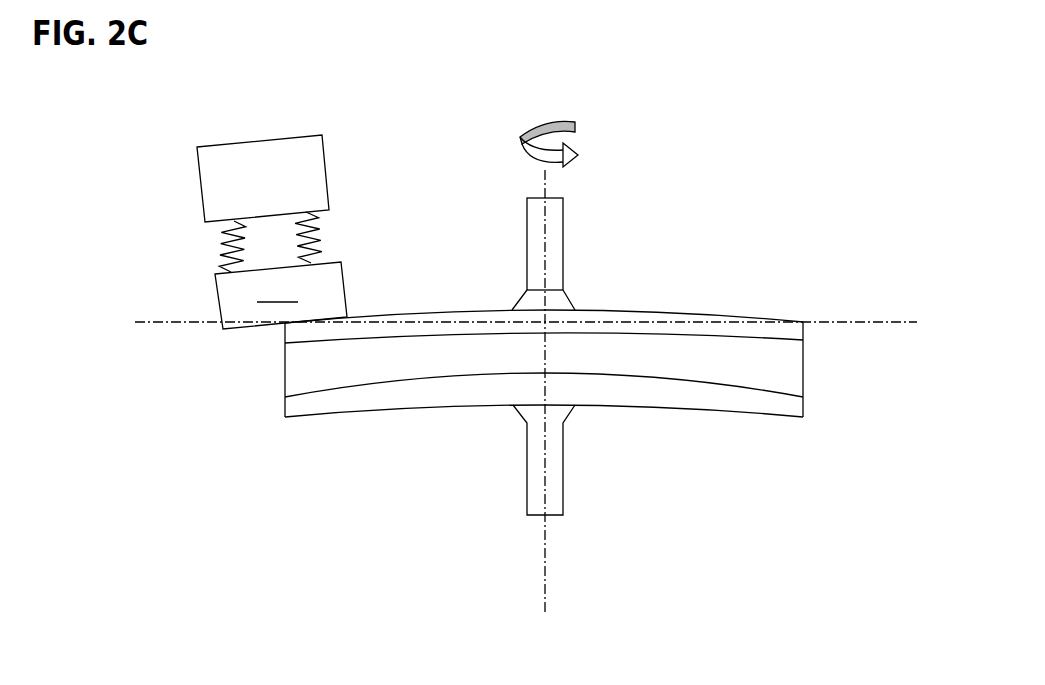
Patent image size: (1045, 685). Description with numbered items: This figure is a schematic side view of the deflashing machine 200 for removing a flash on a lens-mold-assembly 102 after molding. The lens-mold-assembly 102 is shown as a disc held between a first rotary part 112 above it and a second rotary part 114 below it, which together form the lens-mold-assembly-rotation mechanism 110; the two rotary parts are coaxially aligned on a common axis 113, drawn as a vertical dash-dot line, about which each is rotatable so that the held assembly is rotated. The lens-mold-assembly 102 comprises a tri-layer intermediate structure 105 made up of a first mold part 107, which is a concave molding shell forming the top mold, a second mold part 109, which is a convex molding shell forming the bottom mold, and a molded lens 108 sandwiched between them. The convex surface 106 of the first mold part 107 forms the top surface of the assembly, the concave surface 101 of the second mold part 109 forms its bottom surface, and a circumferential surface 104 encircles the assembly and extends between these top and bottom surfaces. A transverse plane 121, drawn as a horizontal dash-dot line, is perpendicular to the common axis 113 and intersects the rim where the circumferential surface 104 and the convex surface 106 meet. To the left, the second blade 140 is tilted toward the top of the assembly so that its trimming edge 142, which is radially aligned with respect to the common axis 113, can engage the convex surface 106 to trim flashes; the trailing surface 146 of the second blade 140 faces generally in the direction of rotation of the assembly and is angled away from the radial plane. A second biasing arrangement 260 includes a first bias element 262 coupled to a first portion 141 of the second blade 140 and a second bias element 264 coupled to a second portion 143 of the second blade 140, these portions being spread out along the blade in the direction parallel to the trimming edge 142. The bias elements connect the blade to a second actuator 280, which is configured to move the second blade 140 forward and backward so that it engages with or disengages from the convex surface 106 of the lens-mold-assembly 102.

The concave surface 101 is at (594, 359).
The lens-mold-assembly 102 is at (795, 313).
The circumferential surface 104 is at (803, 417).
The tri-layer intermediate structure 105 is at (616, 370).
The convex surface 106 is at (697, 315).
The first mold part 107 is at (787, 340).
The molded lens 108 is at (782, 368).
The second mold part 109 is at (782, 407).
The lens-mold-assembly-rotation mechanism 110 is at (610, 356).
The first rotary part 112 is at (555, 217).
The common axis 113 is at (545, 176).
The second rotary part 114 is at (558, 467).
The transverse plane 121 is at (898, 323).
The second blade 140 is at (274, 316).
The first portion 141 is at (310, 270).
The trimming edge 142 is at (236, 330).
The second portion 143 is at (238, 278).
The trailing surface 146 is at (277, 290).
The deflashing machine 200 is at (768, 213).
The second biasing arrangement 260 is at (193, 222).
The first bias element 262 is at (227, 230).
The second bias element 264 is at (223, 260).
The second actuator 280 is at (312, 160).